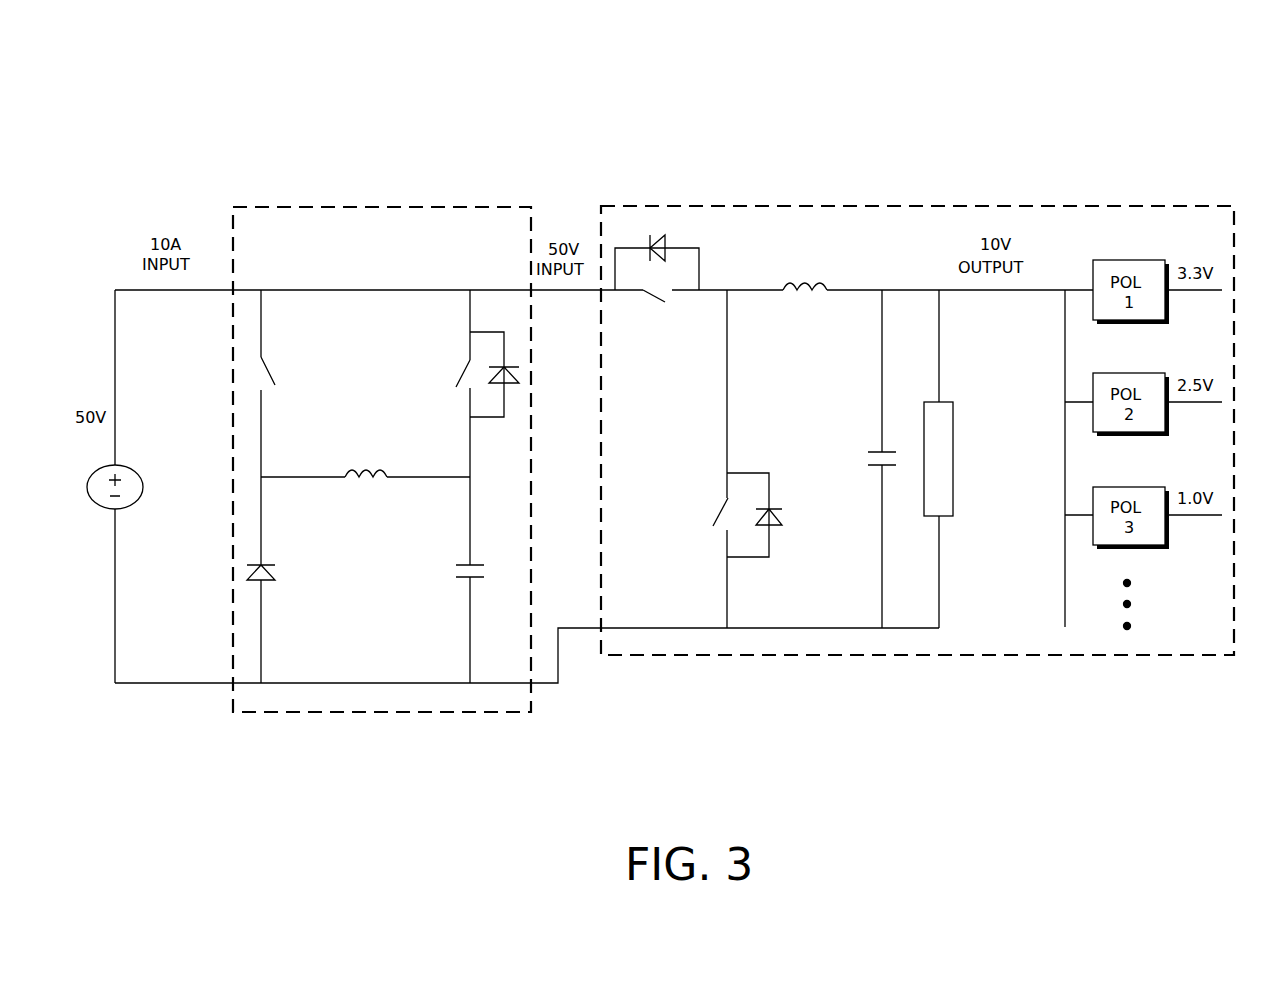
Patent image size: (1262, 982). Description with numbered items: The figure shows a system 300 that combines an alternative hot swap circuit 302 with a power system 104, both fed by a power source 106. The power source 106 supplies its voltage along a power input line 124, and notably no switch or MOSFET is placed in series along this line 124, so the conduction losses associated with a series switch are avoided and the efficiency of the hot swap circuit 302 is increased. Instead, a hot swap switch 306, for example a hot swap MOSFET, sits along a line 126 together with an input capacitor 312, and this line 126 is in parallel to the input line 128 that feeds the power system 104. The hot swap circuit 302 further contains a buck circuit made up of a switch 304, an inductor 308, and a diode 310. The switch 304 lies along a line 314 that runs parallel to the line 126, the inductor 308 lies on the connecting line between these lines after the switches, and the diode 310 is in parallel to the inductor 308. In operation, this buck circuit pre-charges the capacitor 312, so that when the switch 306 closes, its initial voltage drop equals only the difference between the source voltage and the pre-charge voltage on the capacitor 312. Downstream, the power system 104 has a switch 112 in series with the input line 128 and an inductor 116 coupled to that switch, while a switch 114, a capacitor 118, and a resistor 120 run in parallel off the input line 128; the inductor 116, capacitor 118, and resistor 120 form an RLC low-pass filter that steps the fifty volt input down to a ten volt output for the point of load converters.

The system 300 is at (1181, 86).
The hot swap circuit 302 is at (382, 431).
The power system 104 is at (917, 402).
The power input line 124 is at (121, 390).
The power source 106 is at (120, 510).
The line 314 is at (268, 323).
The switch 304 is at (269, 392).
The line 126 is at (468, 326).
The hot swap switch 306 is at (461, 392).
The input line 128 is at (541, 295).
The inductor 308 is at (348, 483).
The input capacitor 312 is at (456, 570).
The diode 310 is at (266, 585).
The switch 112 is at (698, 306).
The switch 114 is at (718, 506).
The inductor 116 is at (825, 285).
The capacitor 118 is at (875, 447).
The resistor 120 is at (947, 398).